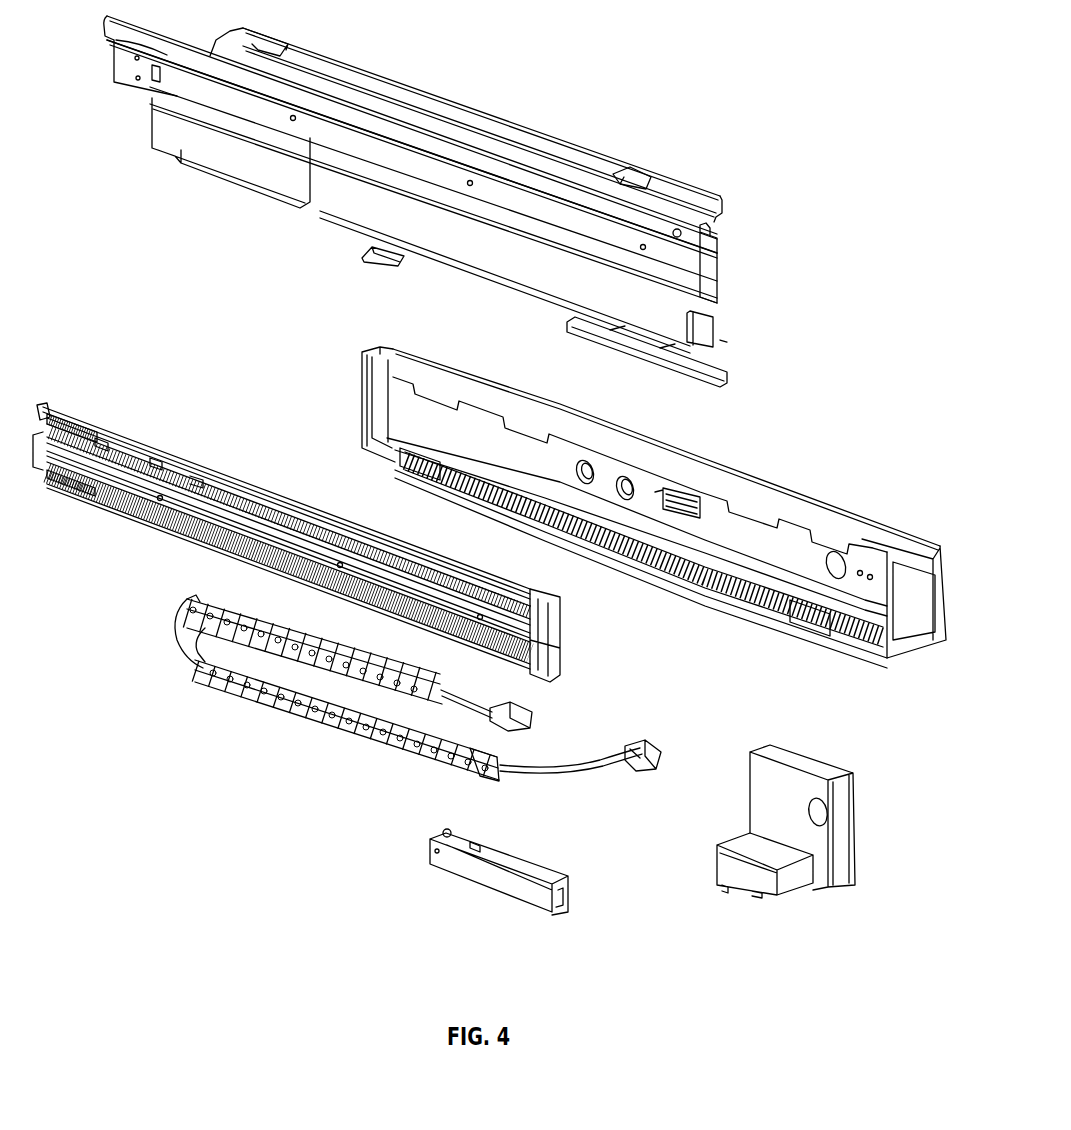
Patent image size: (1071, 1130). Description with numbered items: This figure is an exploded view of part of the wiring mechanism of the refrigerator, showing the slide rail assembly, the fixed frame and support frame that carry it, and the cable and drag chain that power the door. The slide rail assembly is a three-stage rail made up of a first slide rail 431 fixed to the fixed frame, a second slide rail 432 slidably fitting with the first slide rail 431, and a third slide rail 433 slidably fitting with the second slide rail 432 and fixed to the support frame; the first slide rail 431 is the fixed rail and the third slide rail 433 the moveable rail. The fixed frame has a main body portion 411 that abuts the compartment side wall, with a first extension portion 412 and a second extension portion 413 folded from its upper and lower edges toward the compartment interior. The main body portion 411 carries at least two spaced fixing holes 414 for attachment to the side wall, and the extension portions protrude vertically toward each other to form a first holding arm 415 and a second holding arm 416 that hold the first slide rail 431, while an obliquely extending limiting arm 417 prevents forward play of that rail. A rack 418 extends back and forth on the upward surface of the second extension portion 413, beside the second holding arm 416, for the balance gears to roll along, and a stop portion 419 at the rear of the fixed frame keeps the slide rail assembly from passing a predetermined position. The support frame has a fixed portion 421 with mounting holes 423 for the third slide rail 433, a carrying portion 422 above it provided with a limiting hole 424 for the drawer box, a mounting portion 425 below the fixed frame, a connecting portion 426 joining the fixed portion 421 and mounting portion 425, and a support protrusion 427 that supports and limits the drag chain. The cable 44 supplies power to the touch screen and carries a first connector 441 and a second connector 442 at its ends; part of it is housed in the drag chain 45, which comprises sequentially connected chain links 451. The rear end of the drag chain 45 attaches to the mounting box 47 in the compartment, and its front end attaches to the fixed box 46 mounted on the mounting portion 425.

The main body portion 411 is at (473, 422).
The first extension portion 412 is at (773, 488).
The second extension portion 413 is at (368, 467).
The fixing holes 414 is at (593, 467).
The first holding arm 415 is at (857, 535).
The second holding arm 416 is at (803, 615).
The limiting arm 417 is at (687, 480).
The rack 418 is at (695, 585).
The stop portion 419 is at (380, 416).
The fixed portion 421 is at (716, 276).
The carrying portion 422 is at (447, 110).
The mounting holes 423 is at (300, 120).
The limiting hole 424 is at (640, 174).
The mounting portion 425 is at (697, 366).
The connecting portion 426 is at (150, 138).
The support protrusion 427 is at (372, 267).
The first slide rail 431 is at (197, 468).
The second slide rail 432 is at (560, 634).
The third slide rail 433 is at (187, 514).
The cable 44 is at (580, 777).
The first connector 441 is at (648, 752).
The second connector 442 is at (528, 725).
The drag chain 45 is at (180, 645).
The chain links 451 is at (483, 779).
The fixed box 46 is at (480, 889).
The mounting box 47 is at (797, 890).